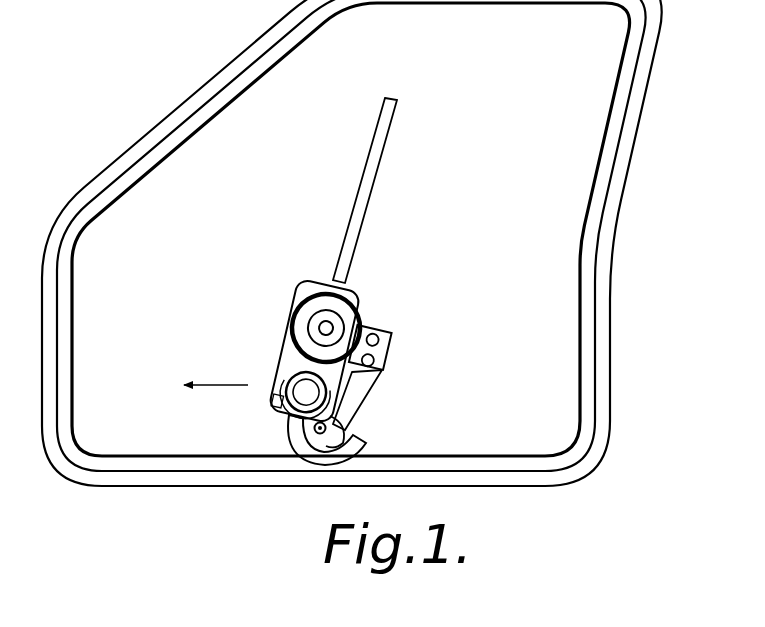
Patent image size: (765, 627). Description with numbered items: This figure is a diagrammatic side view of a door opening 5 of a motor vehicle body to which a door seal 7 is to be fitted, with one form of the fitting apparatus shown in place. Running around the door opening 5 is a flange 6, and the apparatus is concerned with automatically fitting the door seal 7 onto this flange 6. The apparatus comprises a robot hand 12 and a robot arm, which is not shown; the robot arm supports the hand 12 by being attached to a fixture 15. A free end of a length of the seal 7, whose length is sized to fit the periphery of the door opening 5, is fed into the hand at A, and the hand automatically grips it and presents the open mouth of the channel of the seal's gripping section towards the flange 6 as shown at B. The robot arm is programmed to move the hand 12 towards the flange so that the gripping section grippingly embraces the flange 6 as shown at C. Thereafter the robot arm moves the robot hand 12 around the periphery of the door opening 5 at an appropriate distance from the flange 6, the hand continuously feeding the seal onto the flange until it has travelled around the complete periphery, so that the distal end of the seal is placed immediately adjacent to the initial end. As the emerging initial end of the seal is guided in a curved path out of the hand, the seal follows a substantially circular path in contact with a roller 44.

The door opening 5 is at (307, 134).
The flange 6 is at (622, 104).
The door seal 7 is at (366, 202).
The robot hand 12 is at (290, 307).
The fixture 15 is at (290, 418).
The roller 44 is at (305, 449).
The seal feed position A is at (318, 276).
The channel presenting position B is at (289, 439).
The flange gripping position C is at (345, 437).